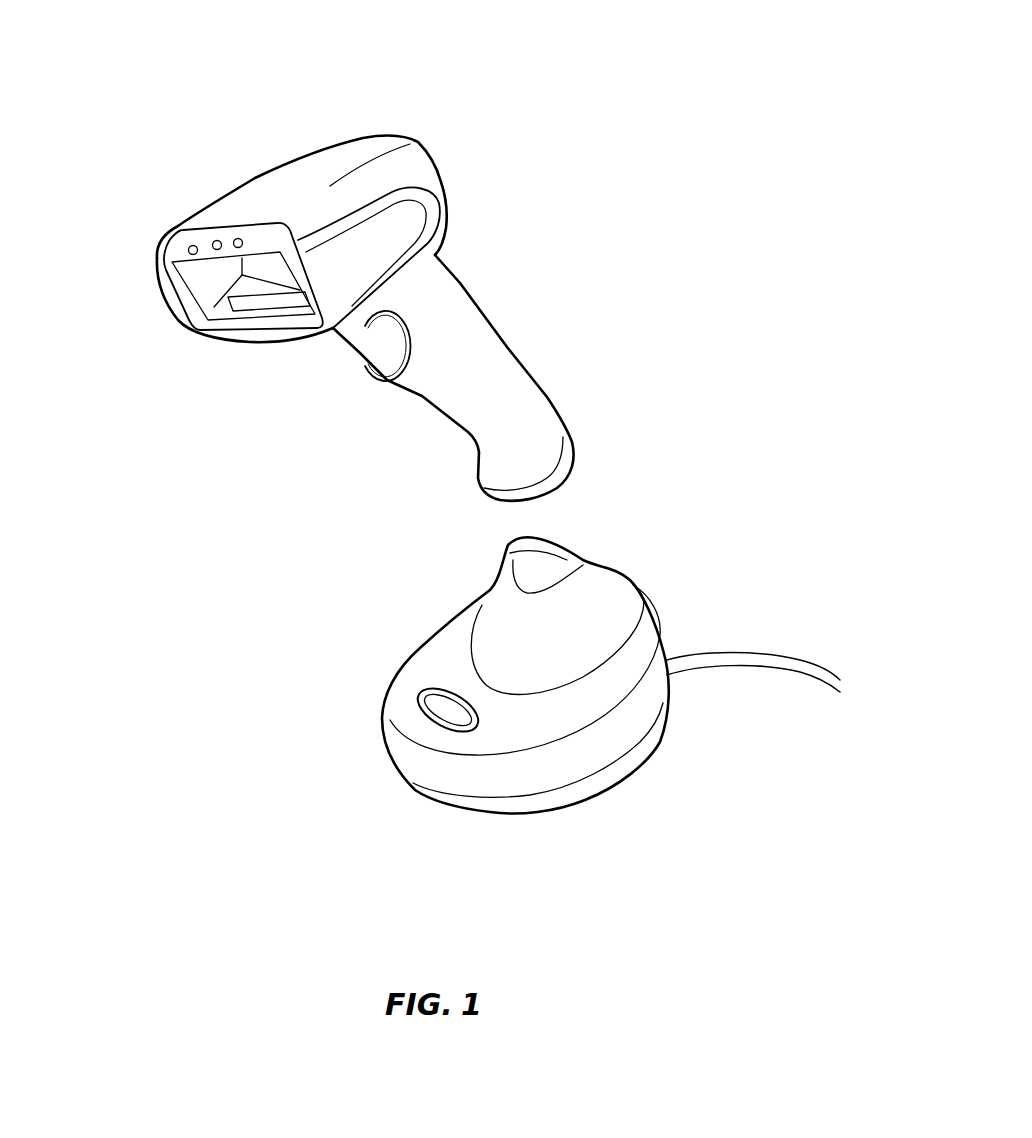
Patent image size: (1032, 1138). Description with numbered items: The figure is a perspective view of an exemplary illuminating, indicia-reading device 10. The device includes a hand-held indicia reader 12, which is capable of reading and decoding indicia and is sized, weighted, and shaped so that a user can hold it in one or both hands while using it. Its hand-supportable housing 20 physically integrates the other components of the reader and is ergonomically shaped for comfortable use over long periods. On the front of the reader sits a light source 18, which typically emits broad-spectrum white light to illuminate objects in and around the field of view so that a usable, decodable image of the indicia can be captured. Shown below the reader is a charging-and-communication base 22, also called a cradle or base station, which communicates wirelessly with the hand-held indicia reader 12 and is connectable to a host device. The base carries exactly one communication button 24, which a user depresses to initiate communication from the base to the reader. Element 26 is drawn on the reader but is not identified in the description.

The indicia-reading device 10 is at (662, 186).
The hand-held indicia reader 12 is at (390, 177).
The light source 18 is at (193, 247).
The hand-supportable housing 20 is at (487, 343).
The charging-and-communication base 22 is at (463, 642).
The communication button 24 is at (423, 713).
The trigger 26 is at (373, 350).